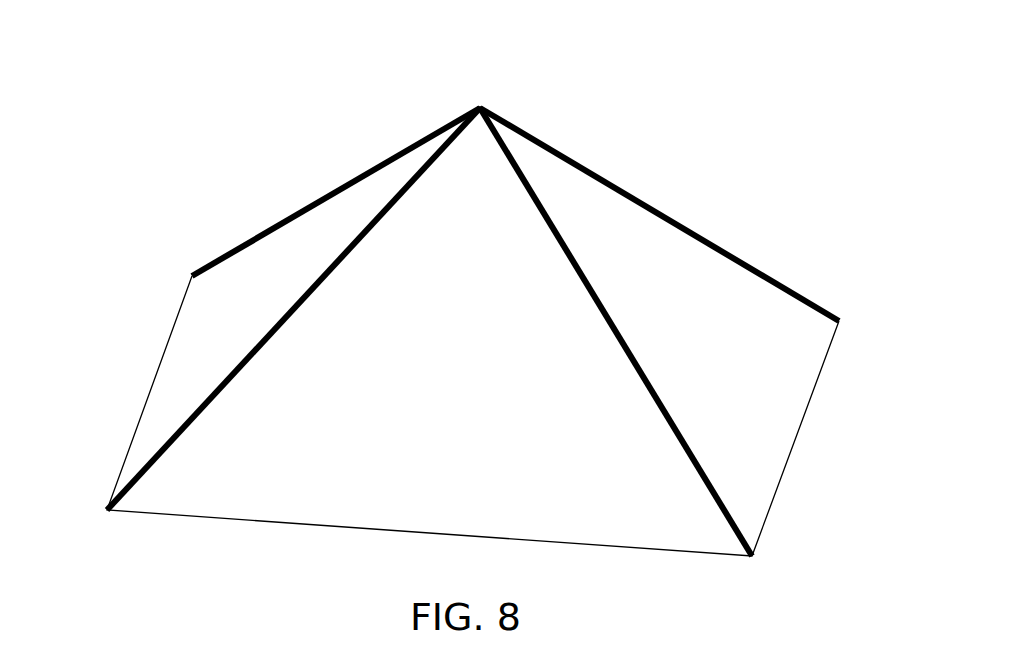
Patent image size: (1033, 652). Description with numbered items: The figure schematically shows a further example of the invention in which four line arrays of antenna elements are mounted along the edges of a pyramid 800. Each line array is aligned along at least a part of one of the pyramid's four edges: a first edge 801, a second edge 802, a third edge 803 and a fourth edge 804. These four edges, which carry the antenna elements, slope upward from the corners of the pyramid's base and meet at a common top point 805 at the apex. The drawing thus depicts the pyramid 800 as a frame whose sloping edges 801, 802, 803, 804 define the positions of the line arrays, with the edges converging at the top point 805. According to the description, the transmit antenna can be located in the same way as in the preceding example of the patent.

The pyramid 800 is at (713, 88).
The first edge 801 is at (655, 207).
The second edge 802 is at (678, 430).
The third edge 803 is at (258, 348).
The fourth edge 804 is at (302, 206).
The top point 805 is at (480, 108).